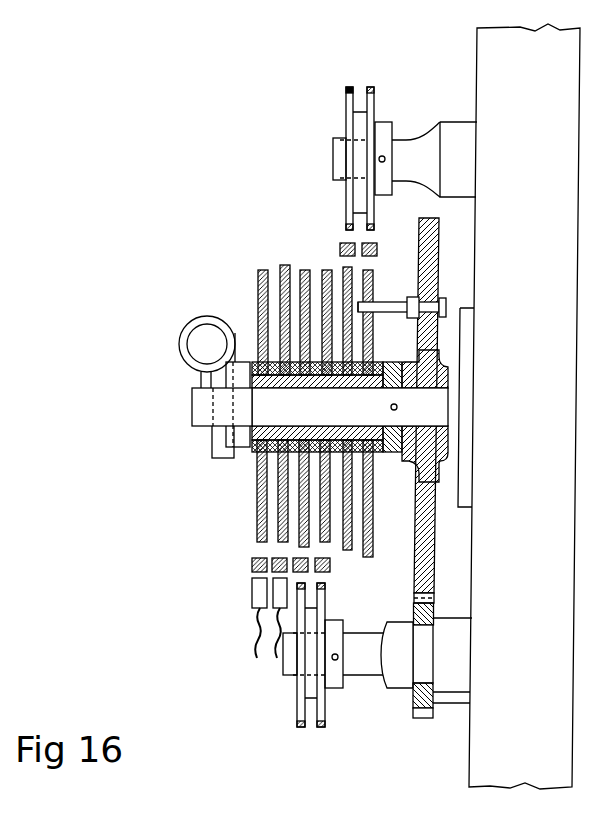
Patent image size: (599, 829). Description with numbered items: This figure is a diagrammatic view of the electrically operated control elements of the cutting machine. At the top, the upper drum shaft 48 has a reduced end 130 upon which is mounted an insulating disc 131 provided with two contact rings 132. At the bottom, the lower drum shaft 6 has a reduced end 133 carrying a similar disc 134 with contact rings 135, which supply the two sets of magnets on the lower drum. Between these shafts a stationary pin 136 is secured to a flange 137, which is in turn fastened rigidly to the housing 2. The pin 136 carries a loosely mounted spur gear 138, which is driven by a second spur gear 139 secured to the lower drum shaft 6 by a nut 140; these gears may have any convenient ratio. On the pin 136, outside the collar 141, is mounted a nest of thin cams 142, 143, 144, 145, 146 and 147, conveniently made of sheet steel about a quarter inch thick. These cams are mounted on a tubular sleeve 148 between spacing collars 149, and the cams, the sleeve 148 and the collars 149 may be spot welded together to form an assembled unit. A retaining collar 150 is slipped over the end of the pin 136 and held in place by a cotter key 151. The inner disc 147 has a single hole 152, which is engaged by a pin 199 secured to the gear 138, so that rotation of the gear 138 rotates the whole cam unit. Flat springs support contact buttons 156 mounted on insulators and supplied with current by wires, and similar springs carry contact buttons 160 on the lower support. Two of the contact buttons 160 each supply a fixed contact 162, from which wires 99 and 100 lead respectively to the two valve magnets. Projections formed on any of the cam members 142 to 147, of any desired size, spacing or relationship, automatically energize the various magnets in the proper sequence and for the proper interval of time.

The housing 2 is at (524, 406).
The lower drum shaft 6 is at (452, 655).
The upper drum shaft 48 is at (458, 159).
The wire 99 is at (255, 650).
The wire 100 is at (278, 660).
The reduced end 130 is at (407, 159).
The insulating disc 131 is at (346, 120).
The contact rings 132 is at (346, 90).
The reduced end 133 is at (356, 654).
The disc 134 is at (320, 705).
The contact rings 135 is at (326, 586).
The stationary pin 136 is at (350, 407).
The flange 137 is at (470, 328).
The spur gear 138 is at (436, 528).
The second spur gear 139 is at (470, 703).
The nut 140 is at (398, 690).
The collar 141 is at (392, 442).
The cam 142 is at (258, 272).
The cam 143 is at (280, 268).
The cam 144 is at (304, 270).
The cam 145 is at (328, 270).
The cam 146 is at (349, 551).
The cam 147 is at (370, 558).
The tubular sleeve 148 is at (262, 452).
The spacing collars 149 is at (262, 352).
The retaining collar 150 is at (243, 432).
The cotter key 151 is at (216, 440).
The hole 152 is at (366, 303).
The contact button 156 is at (371, 244).
The contact buttons 160 is at (252, 565).
The fixed contact 162 is at (280, 597).
The pin 199 is at (398, 313).